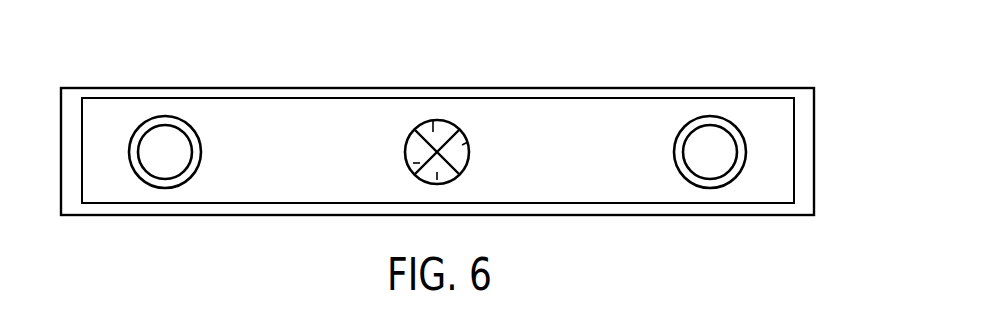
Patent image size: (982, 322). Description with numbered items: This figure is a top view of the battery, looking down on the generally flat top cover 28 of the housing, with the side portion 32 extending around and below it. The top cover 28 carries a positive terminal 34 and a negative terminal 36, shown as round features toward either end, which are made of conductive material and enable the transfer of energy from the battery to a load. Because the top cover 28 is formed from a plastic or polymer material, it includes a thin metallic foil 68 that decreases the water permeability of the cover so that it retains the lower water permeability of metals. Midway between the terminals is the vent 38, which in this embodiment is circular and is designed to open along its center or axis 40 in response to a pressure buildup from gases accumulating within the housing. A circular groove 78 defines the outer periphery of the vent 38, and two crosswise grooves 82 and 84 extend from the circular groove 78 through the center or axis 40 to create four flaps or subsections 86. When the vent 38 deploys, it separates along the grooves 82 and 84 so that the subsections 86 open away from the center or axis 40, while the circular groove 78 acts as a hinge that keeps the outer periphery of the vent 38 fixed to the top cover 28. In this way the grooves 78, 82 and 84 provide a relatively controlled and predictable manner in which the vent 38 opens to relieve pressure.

The top cover 28 is at (626, 164).
The side portion 32 is at (817, 103).
The positive terminal 34 is at (192, 123).
The negative terminal 36 is at (728, 127).
The vent 38 is at (447, 122).
The center or axis 40 is at (437, 180).
The thin metallic foil 68 is at (268, 164).
The circular groove 78 is at (468, 142).
The crosswise groove 82 is at (433, 120).
The crosswise groove 84 is at (413, 163).
The flaps or subsections 86 is at (416, 150).